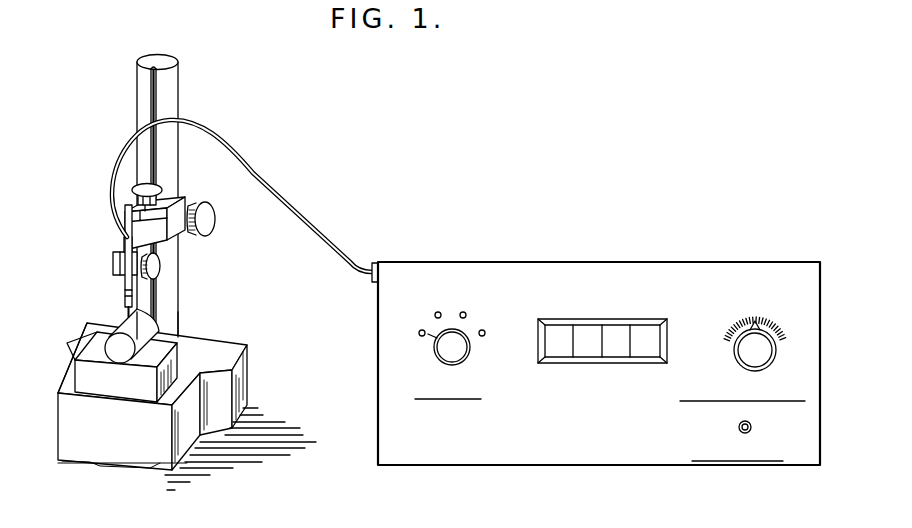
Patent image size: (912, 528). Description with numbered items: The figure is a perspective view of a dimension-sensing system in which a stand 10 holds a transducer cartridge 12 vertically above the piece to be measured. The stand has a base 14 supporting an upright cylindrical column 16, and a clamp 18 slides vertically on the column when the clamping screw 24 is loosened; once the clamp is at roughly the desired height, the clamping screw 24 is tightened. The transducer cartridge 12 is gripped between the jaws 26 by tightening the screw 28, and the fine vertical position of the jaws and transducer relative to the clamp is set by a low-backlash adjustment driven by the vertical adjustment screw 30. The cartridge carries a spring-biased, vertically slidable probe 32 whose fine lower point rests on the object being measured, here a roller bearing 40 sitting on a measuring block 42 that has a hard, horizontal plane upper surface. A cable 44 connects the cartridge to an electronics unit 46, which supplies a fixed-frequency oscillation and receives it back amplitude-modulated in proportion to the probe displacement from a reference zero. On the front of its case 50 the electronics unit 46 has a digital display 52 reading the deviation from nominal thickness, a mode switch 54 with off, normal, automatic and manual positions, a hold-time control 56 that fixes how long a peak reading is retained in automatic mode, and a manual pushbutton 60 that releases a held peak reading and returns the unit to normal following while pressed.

The stand 10 is at (75, 327).
The transducer cartridge 12 is at (123, 285).
The base 14 is at (238, 345).
The cylindrical column 16 is at (138, 70).
The clamp 18 is at (187, 190).
The clamping screw 24 is at (215, 219).
The jaws 26 is at (115, 255).
The screw 28 is at (160, 266).
The vertical adjustment screw 30 is at (155, 185).
The probe 32 is at (150, 314).
The roller bearing 40 is at (113, 350).
The measuring block 42 is at (100, 380).
The cable 44 is at (115, 153).
The electronics unit 46 is at (477, 262).
The case 50 is at (723, 263).
The digital display 52 is at (615, 322).
The mode switch 54 is at (432, 352).
The hold-time control 56 is at (763, 353).
The manual pushbutton 60 is at (752, 427).